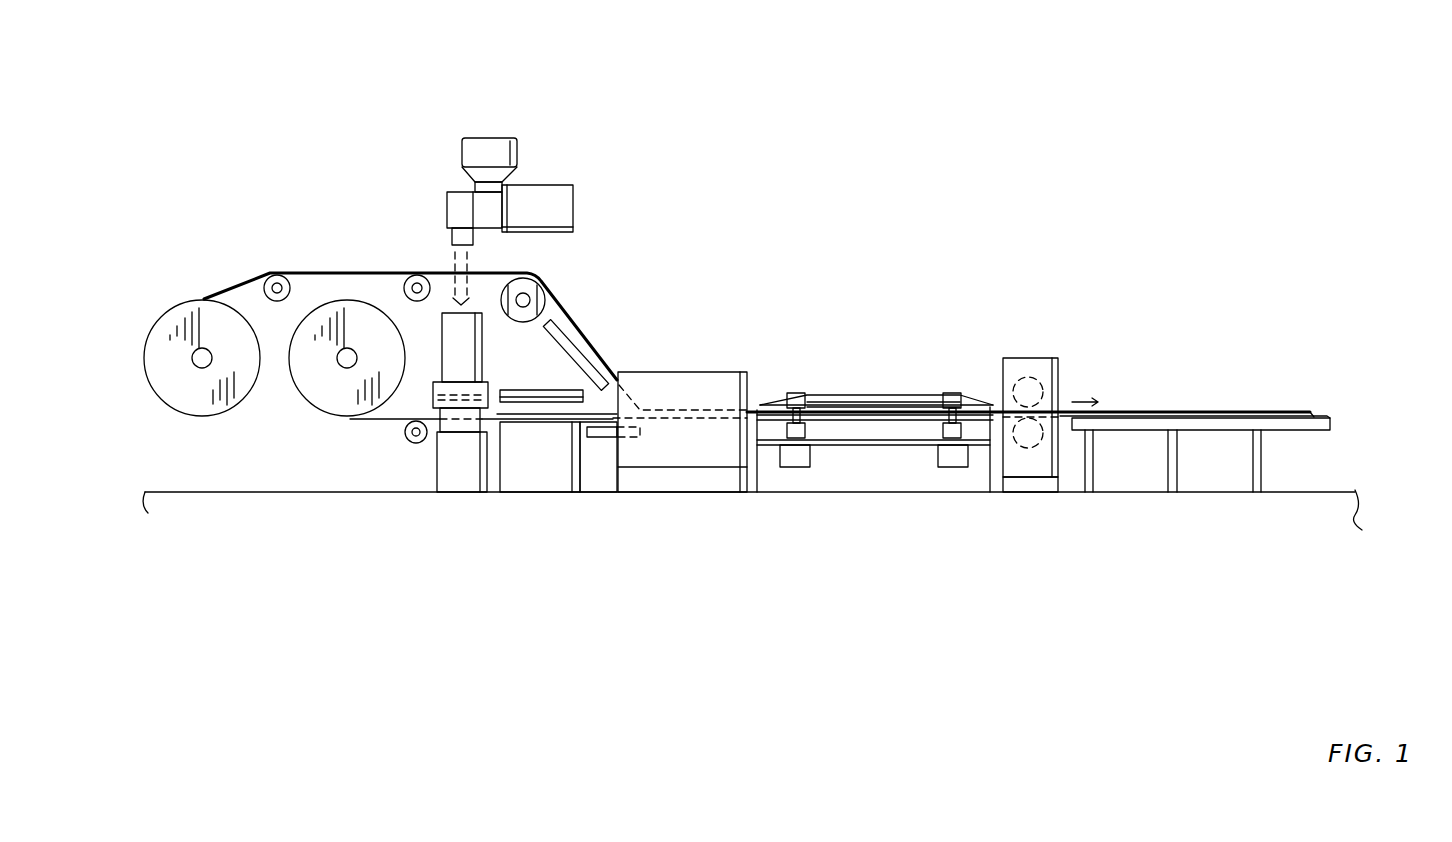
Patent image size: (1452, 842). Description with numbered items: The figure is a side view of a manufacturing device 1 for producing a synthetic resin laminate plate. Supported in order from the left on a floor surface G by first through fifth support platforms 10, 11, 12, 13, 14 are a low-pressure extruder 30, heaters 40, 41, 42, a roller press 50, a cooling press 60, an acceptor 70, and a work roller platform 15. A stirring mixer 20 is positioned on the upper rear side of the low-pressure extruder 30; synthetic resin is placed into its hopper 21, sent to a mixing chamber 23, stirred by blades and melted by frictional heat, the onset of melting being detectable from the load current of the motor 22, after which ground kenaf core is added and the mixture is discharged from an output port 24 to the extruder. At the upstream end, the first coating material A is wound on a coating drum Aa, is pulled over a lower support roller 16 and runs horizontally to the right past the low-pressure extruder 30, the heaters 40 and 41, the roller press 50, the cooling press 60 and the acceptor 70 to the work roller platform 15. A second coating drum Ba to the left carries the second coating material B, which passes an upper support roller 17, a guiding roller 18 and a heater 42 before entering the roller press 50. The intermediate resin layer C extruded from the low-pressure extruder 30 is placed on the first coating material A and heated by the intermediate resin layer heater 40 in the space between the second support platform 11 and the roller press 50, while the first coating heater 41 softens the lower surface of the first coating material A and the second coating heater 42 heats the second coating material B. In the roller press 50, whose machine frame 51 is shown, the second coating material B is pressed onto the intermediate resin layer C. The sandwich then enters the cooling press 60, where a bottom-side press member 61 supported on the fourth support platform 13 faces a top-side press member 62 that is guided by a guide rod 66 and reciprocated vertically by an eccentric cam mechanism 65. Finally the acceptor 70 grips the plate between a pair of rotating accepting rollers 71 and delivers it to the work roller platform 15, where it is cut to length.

The manufacturing device 1 is at (826, 250).
The first support platform 10 is at (460, 480).
The second support platform 11 is at (548, 482).
The third support platform 12 is at (678, 485).
The fourth support platform 13 is at (908, 485).
The fifth support platform 14 is at (1028, 485).
The work roller platform 15 is at (1207, 422).
The lower support roller 16 is at (412, 444).
The upper support roller 17 is at (268, 274).
The guiding roller 18 is at (545, 272).
The stirring mixer 20 is at (494, 209).
The hopper 21 is at (510, 150).
The motor 22 is at (552, 180).
The mixing chamber 23 is at (453, 205).
The output port 24 is at (468, 240).
The low-pressure extruder 30 is at (484, 350).
The intermediate resin layer heater 40 is at (560, 398).
The first coating heater 41 is at (598, 440).
The second coating heater 42 is at (580, 354).
The roller press 50 is at (682, 434).
The machine frame 51 is at (672, 383).
The cooling press 60 is at (1028, 445).
The bottom-side press member 61 is at (877, 432).
The top-side press member 62 is at (866, 392).
The eccentric cam mechanism 65 is at (795, 468).
The guide rod 66 is at (797, 390).
The acceptor 70 is at (1060, 428).
The accepting rollers 71 is at (1040, 363).
The first coating material A is at (390, 421).
The coating drum Aa is at (322, 392).
The second coating material B is at (560, 312).
The coating drum Ba is at (175, 422).
The intermediate resin layer C is at (515, 413).
The floor surface G is at (1308, 500).